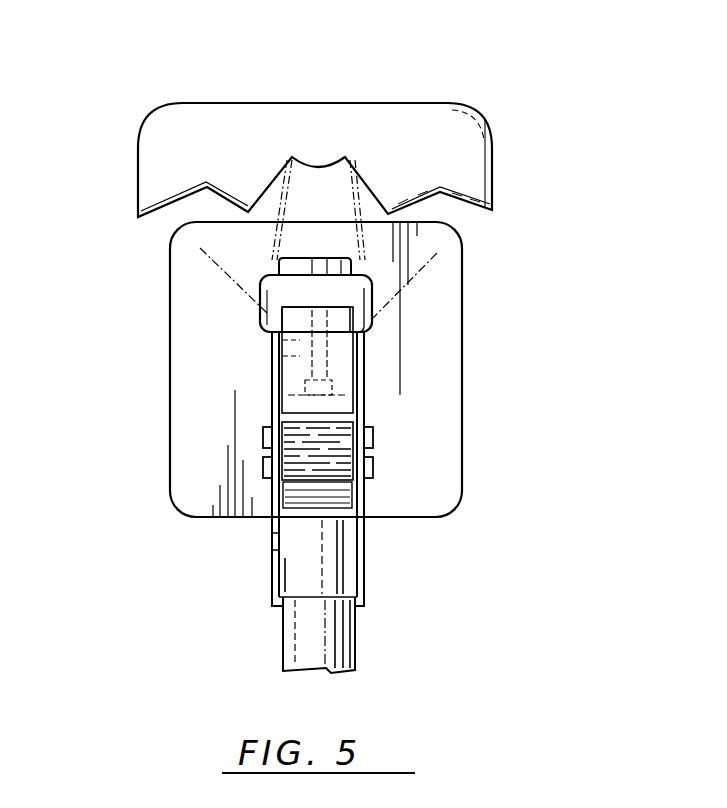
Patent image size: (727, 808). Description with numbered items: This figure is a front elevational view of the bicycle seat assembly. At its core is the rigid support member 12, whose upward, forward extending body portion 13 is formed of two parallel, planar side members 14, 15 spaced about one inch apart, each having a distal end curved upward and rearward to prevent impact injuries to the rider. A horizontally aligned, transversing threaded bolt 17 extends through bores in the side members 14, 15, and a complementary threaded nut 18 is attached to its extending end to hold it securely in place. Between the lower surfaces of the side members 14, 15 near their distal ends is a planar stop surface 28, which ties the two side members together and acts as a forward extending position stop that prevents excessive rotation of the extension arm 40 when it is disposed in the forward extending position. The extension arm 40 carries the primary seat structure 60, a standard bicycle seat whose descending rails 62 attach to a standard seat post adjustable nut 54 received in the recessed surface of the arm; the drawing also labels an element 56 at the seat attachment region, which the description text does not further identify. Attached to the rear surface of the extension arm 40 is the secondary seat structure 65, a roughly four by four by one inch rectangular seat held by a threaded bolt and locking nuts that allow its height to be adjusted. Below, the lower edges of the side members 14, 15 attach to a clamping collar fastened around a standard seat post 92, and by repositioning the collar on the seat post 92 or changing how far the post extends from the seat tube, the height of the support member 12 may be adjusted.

The primary seat structure 60 is at (450, 96).
The secondary seat structure 65 is at (462, 313).
The seat post adjustable nut 54 is at (350, 268).
The block 56 is at (268, 296).
The rails 62 is at (368, 292).
The extension arm 40 is at (340, 343).
The first side member 14 is at (272, 370).
The second side member 15 is at (364, 383).
The stop surface 28 is at (340, 428).
The threaded bolt 17 is at (263, 468).
The threaded nut 18 is at (373, 468).
The rigid support member 12 is at (255, 546).
The body portion 13 is at (300, 545).
The seat post 92 is at (297, 637).